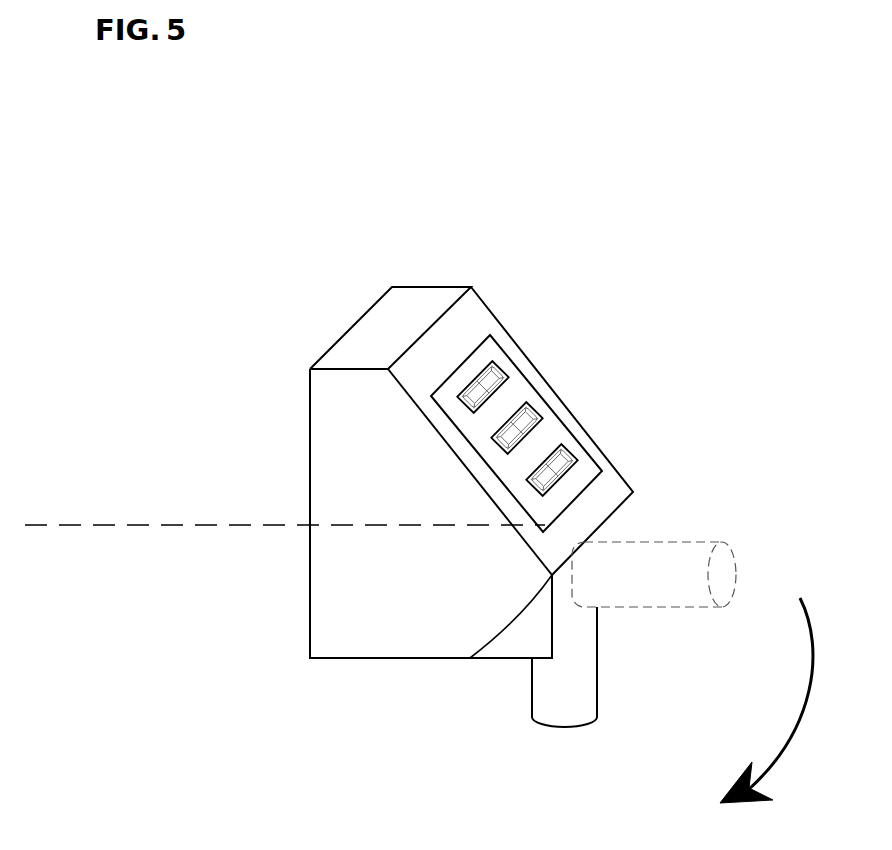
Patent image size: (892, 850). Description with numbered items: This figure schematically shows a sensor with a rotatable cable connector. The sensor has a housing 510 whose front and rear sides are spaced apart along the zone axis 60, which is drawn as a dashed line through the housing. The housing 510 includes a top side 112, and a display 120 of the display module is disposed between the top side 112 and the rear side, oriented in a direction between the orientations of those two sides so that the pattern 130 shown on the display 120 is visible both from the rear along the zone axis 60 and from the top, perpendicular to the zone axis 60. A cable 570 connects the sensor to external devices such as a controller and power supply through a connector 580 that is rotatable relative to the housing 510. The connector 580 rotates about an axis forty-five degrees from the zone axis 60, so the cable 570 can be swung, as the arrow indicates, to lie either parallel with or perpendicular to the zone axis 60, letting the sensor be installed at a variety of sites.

The zone axis 60 is at (127, 525).
The top side 112 is at (413, 305).
The display 120 is at (468, 323).
The pattern 130 is at (513, 397).
The housing 510 is at (362, 625).
The cable 570 is at (645, 542).
The connector 580 is at (513, 638).